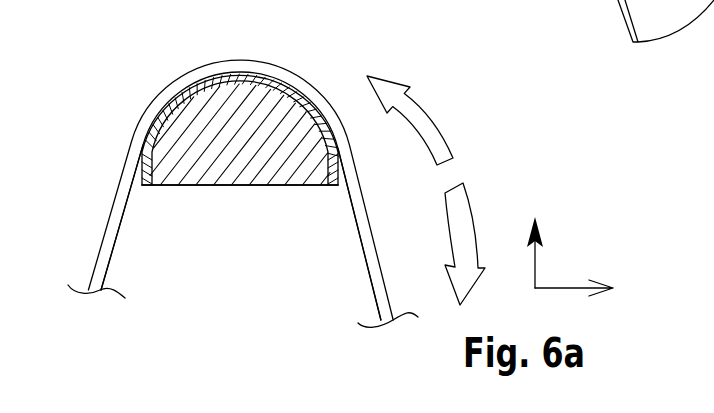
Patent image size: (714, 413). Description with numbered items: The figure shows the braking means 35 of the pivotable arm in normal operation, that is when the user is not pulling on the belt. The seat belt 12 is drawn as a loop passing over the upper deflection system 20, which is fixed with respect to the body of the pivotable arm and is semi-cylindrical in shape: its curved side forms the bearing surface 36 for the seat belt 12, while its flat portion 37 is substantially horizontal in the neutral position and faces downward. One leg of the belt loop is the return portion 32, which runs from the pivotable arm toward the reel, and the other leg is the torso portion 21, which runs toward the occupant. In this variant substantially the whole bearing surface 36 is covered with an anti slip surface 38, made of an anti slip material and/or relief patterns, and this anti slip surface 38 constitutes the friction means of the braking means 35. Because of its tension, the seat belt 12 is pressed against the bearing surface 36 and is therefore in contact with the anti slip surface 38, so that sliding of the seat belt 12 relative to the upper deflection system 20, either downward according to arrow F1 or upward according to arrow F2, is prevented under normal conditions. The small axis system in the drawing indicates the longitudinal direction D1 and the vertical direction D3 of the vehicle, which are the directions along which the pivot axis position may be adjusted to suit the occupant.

The seat belt 12 is at (88, 266).
The return portion 32 is at (115, 230).
The torso portion 21 is at (378, 278).
The upper deflection system 20 is at (240, 145).
The braking means 35 is at (240, 96).
The bearing surface 36 is at (240, 96).
The anti slip surface 38 is at (237, 77).
The flat portion 37 is at (203, 188).
The arrow F1 is at (465, 228).
The arrow F2 is at (427, 132).
The longitudinal direction D1 is at (585, 278).
The vertical direction D3 is at (552, 248).